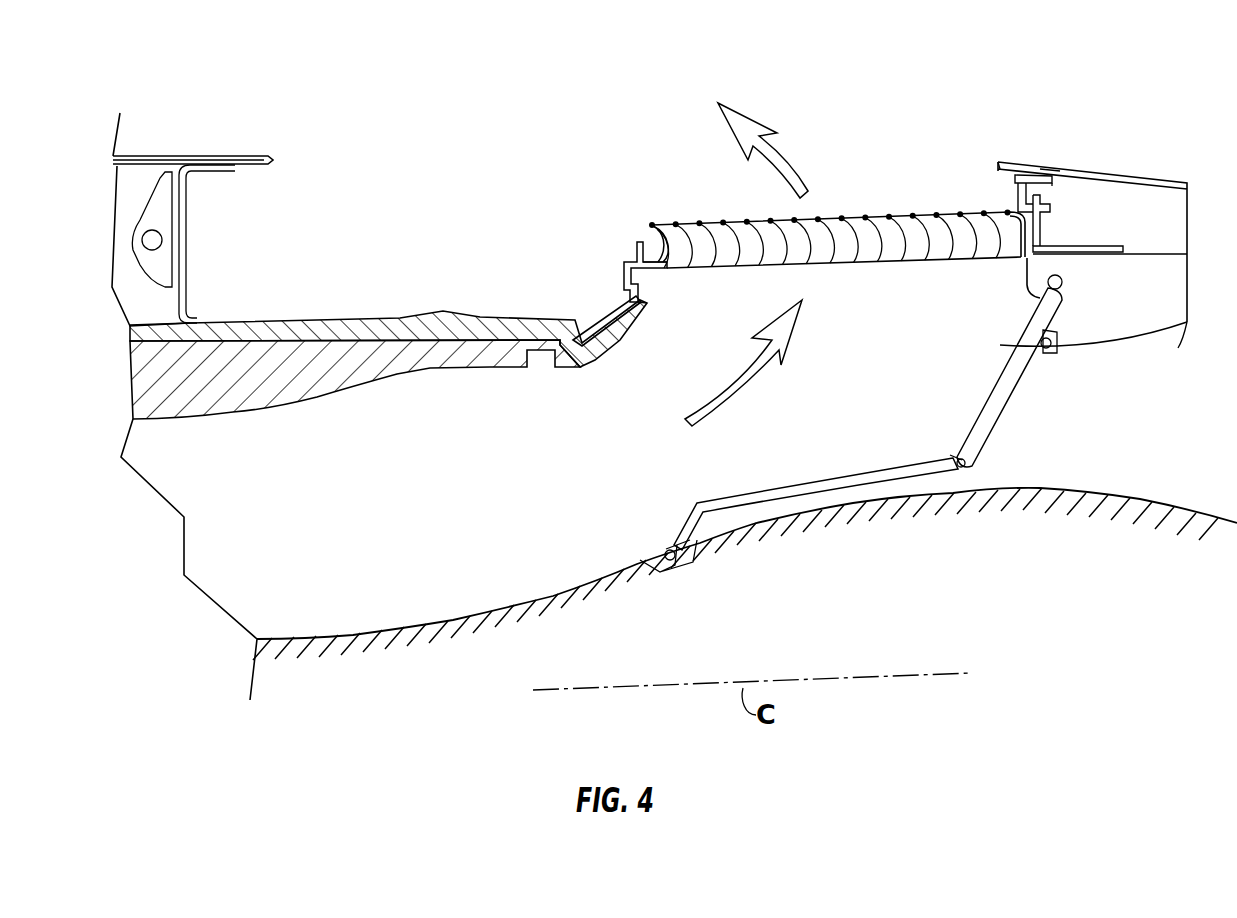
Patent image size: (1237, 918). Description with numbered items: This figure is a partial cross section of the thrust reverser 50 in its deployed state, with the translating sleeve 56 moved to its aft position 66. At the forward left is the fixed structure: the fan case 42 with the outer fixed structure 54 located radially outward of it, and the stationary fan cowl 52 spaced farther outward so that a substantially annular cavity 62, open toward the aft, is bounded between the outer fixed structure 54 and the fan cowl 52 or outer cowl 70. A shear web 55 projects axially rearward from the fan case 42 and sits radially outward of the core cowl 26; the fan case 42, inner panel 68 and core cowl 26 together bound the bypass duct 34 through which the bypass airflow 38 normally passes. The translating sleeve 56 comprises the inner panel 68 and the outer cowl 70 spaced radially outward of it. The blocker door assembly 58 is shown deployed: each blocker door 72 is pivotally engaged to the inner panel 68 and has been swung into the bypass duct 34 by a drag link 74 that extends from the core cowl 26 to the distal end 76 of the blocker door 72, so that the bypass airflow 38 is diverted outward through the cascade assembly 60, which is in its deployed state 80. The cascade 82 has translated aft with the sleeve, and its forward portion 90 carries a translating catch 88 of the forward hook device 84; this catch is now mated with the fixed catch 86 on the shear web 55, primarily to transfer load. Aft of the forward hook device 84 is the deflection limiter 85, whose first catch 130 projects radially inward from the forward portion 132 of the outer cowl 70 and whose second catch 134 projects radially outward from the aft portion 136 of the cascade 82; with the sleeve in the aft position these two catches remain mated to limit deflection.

The core cowl 26 is at (1142, 497).
The bypass duct 34 is at (389, 513).
The bypass airflow 38 is at (745, 385).
The fan case 42 is at (322, 393).
The thrust reverser 50 is at (943, 96).
The fan cowl 52 is at (248, 156).
The outer fixed structure 54 is at (372, 306).
The shear web 55 is at (606, 311).
The translating sleeve 56 is at (1138, 170).
The blocker door assembly 58 is at (940, 453).
The cascade assembly 60 is at (843, 214).
The cavity 62 is at (244, 250).
The aft position 66 is at (1182, 335).
The inner panel 68 is at (1100, 348).
The outer cowl 70 is at (1049, 168).
The blocker door 72 is at (1020, 400).
The drag link 74 is at (730, 502).
The distal end 76 is at (972, 470).
The deployed state 80 is at (763, 150).
The cascade 82 is at (895, 266).
The forward hook device 84 is at (604, 280).
The deflection limiter 85 is at (1070, 197).
The fixed catch 86 is at (658, 280).
The translating catch 88 is at (622, 266).
The forward portion 90 is at (650, 225).
The first catch 130 is at (1012, 206).
The forward portion 132 is at (999, 162).
The second catch 134 is at (1043, 226).
The aft portion 136 is at (1033, 290).